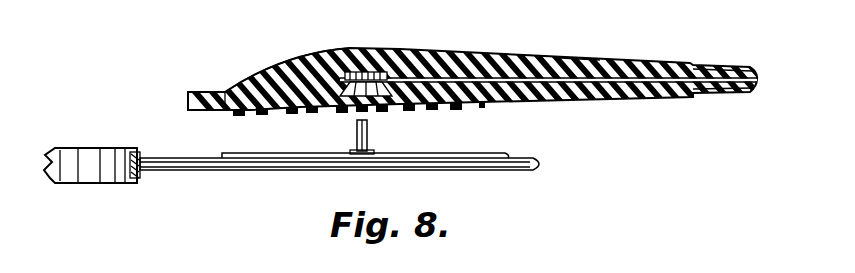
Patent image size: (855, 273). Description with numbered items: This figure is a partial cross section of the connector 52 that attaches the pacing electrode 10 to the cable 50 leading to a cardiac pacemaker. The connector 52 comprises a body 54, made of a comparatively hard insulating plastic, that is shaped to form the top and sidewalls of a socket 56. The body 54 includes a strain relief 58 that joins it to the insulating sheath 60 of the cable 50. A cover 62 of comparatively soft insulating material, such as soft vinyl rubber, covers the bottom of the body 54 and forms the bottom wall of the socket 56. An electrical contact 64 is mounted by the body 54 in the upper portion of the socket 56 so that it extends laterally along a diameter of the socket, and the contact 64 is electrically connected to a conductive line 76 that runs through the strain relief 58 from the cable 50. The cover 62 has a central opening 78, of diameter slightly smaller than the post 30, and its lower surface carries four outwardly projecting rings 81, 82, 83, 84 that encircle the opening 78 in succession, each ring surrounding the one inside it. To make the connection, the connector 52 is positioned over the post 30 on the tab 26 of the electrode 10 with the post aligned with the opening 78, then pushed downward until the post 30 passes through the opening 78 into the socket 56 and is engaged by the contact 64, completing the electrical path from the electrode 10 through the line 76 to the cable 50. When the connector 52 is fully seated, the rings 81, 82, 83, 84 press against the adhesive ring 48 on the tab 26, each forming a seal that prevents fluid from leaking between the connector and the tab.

The pacing electrode 10 is at (90, 148).
The tab 26 is at (153, 158).
The post 30 is at (358, 136).
The adhesive ring 48 is at (228, 153).
The cable 50 is at (718, 66).
The connector 52 is at (530, 61).
The body 54 is at (462, 58).
The socket 56 is at (282, 82).
The strain relief 58 is at (666, 62).
The insulating sheath 60 is at (733, 90).
The cover 62 is at (228, 92).
The electrical contact 64 is at (392, 74).
The conductive line 76 is at (598, 62).
The central opening 78 is at (352, 113).
The ring 81 is at (410, 108).
The ring 82 is at (432, 108).
The ring 83 is at (458, 112).
The ring 84 is at (482, 110).